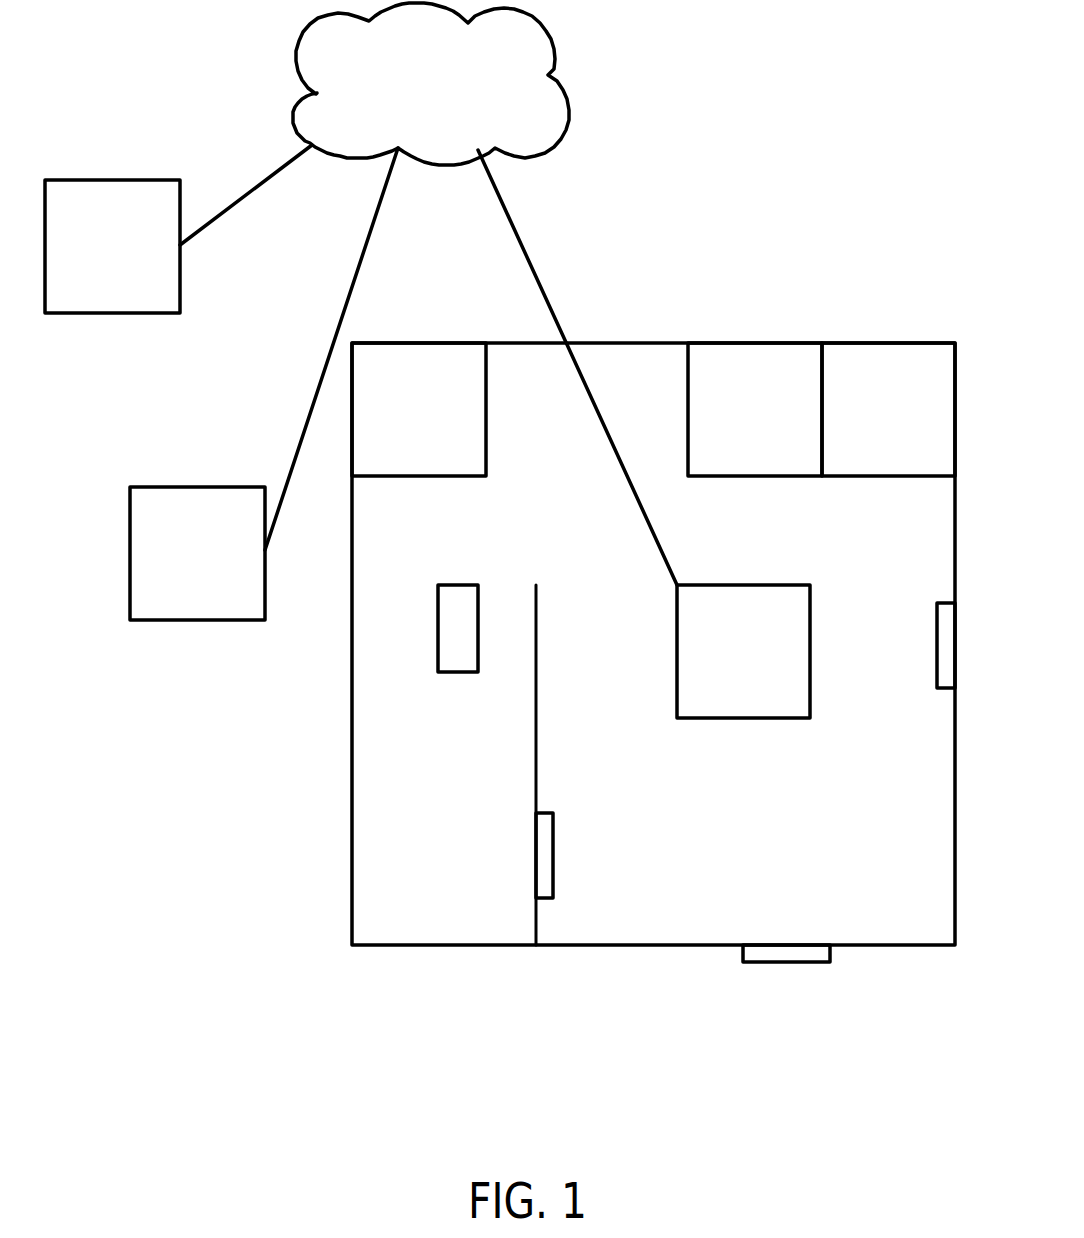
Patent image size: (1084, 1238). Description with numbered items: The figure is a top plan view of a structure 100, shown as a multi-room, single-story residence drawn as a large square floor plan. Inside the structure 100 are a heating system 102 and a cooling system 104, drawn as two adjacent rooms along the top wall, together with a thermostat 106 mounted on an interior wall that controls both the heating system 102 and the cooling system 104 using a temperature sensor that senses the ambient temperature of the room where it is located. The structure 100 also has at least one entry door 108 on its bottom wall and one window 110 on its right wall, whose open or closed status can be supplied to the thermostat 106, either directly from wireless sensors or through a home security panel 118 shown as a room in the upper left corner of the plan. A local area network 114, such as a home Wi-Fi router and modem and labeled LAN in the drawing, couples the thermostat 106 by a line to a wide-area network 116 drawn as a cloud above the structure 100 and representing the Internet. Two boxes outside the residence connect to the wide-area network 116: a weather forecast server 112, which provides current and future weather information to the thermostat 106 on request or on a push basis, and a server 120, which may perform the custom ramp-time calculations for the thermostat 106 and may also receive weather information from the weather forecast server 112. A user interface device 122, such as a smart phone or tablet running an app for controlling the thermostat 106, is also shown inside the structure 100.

The structure 100 is at (884, 947).
The heating system 102 is at (712, 345).
The cooling system 104 is at (857, 345).
The thermostat 106 is at (554, 835).
The entry door 108 is at (785, 963).
The window 110 is at (945, 690).
The weather forecast server 112 is at (92, 262).
The local area network 114 is at (730, 585).
The wide-area network 116 is at (447, 95).
The home security panel 118 is at (487, 398).
The server 120 is at (177, 569).
The user interface device 122 is at (438, 604).